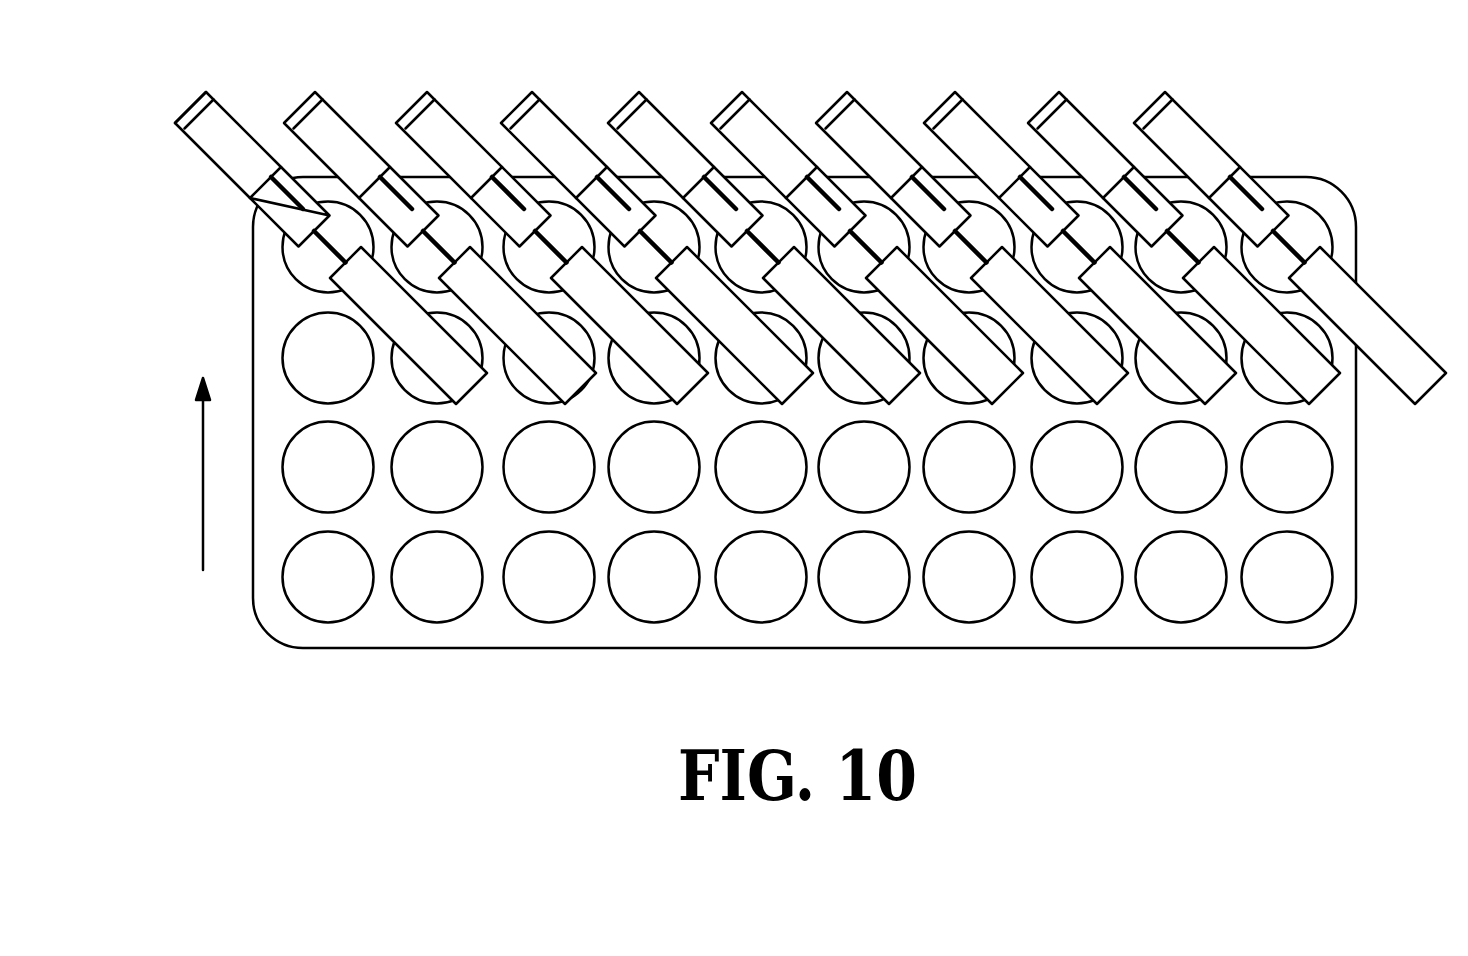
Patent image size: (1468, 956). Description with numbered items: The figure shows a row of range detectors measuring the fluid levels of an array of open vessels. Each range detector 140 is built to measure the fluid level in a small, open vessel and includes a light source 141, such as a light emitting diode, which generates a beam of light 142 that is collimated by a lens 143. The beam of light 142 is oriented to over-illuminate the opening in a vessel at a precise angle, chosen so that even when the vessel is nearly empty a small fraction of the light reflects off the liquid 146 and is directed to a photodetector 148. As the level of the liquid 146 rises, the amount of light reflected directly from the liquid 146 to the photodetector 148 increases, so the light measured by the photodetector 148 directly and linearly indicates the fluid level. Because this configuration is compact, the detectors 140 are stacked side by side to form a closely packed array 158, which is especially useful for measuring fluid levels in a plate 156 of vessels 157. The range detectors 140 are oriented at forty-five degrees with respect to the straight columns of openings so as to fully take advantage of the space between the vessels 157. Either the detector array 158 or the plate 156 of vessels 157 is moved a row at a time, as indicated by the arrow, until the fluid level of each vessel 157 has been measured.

The range detector 140 is at (292, 72).
The light source 141 is at (220, 132).
The lens 143 is at (223, 179).
The beam of light 142 is at (257, 221).
The photodetector 148 is at (372, 297).
The liquid 146 is at (353, 381).
The plate 156 is at (252, 576).
The vessels 157 is at (332, 592).
The array 158 is at (1290, 125).